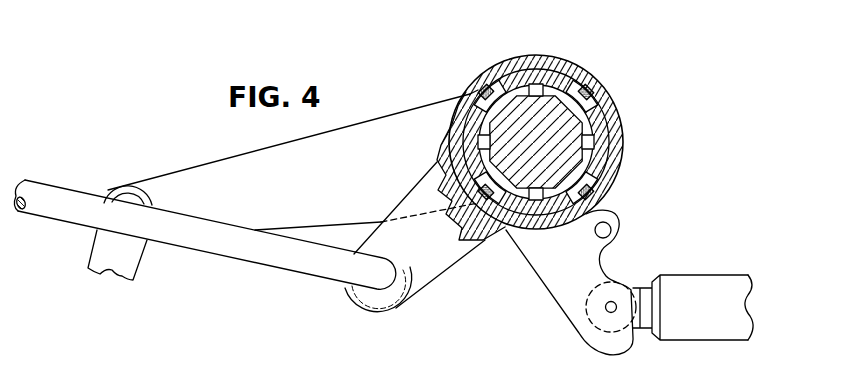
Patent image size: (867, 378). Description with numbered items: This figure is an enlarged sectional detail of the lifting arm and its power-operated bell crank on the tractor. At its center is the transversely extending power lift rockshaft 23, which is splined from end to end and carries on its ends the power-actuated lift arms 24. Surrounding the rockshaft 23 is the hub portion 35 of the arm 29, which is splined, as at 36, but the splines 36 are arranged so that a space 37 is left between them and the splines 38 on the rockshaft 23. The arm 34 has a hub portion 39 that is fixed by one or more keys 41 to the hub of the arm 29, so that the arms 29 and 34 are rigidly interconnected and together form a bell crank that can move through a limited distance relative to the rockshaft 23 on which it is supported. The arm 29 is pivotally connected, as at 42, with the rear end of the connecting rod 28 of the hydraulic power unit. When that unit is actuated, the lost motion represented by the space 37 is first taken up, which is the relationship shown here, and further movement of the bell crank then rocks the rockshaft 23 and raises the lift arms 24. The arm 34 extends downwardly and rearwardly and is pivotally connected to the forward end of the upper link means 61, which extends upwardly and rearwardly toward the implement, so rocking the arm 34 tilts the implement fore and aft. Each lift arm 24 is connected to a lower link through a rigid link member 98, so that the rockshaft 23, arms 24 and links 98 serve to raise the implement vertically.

The power lift rockshaft 23 is at (557, 155).
The lift arm 24 is at (229, 164).
The connecting rod 28 is at (693, 327).
The arm 29 is at (547, 270).
The arm 34 is at (438, 268).
The hub portion 35 is at (458, 128).
The splines 36 is at (585, 93).
The space 37 is at (553, 95).
The splines 38 is at (528, 86).
The hub portion 39 is at (474, 92).
The key 41 is at (594, 96).
The pivotal connection 42 is at (608, 307).
The upper link means 61 is at (58, 183).
The link member 98 is at (146, 263).